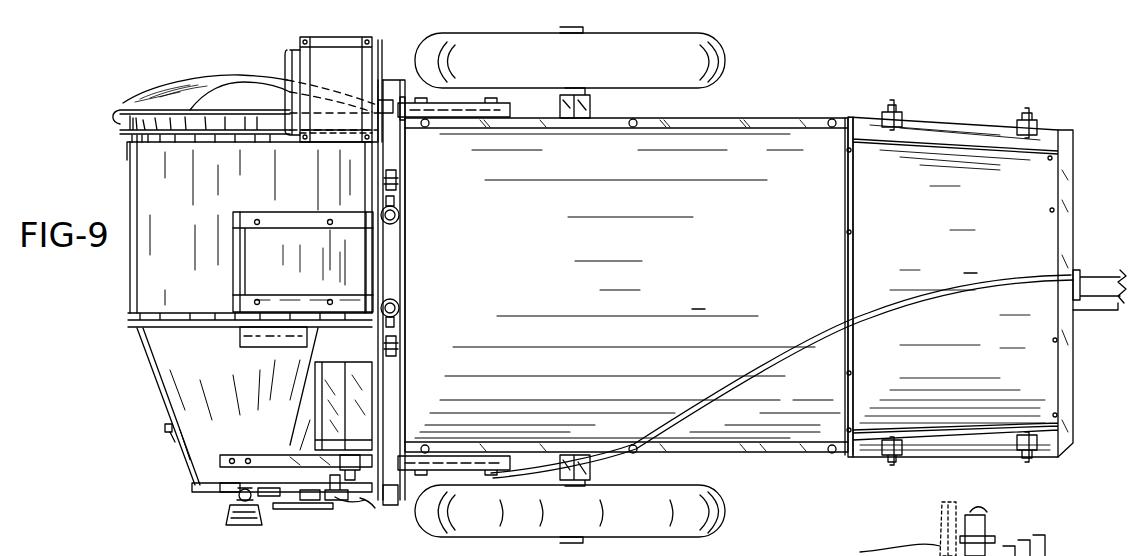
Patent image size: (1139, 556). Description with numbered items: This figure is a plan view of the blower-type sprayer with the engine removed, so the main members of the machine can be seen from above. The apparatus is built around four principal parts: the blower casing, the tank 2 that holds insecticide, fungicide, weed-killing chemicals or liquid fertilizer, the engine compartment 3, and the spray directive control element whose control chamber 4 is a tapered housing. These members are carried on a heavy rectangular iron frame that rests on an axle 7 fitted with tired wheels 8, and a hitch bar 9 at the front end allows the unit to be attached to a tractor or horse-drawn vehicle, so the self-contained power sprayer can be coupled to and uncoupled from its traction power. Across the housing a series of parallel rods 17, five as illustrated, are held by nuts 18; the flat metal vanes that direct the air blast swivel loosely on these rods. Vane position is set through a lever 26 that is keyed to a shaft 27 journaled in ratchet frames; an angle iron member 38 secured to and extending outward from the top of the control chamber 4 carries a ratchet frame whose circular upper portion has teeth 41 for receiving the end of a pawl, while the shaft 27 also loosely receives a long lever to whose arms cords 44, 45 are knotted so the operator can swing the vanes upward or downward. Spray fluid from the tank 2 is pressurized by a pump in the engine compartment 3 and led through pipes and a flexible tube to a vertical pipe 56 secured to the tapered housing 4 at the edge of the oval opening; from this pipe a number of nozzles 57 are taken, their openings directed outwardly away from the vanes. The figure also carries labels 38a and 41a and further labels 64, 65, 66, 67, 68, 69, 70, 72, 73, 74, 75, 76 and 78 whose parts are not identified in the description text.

The tank 2 is at (629, 286).
The engine compartment 3 is at (960, 282).
The control chamber 4 is at (165, 402).
The axle 7 is at (592, 104).
The tired wheels 8 is at (712, 80).
The hitch bar 9 is at (1092, 306).
The parallel rods 17 is at (164, 428).
The nuts 18 is at (172, 438).
The lever 26 is at (312, 510).
The shaft 27 is at (340, 508).
The angle iron member 38 is at (258, 458).
The bottom bar end piece 38a is at (224, 485).
The teeth 41 is at (300, 500).
The lever housing 41a is at (355, 465).
The cord 44 is at (821, 343).
The cord 45 is at (810, 346).
The vertical pipe 56 is at (236, 500).
The nozzles 57 is at (246, 527).
The flexible connector 64 is at (365, 503).
The support beam 65 is at (464, 104).
The vertical column 66 is at (398, 76).
The column post 67 is at (384, 72).
The column fitting 68 is at (405, 100).
The roller wheel 69 is at (400, 215).
The roller bracket 70 is at (398, 224).
The roller fitting 72 is at (398, 180).
The hopper wall 73 is at (138, 212).
The hopper rim 74 is at (118, 120).
The hopper dome cap 75 is at (157, 99).
The hopper lower band 76 is at (128, 314).
The hopper frame 78 is at (285, 218).